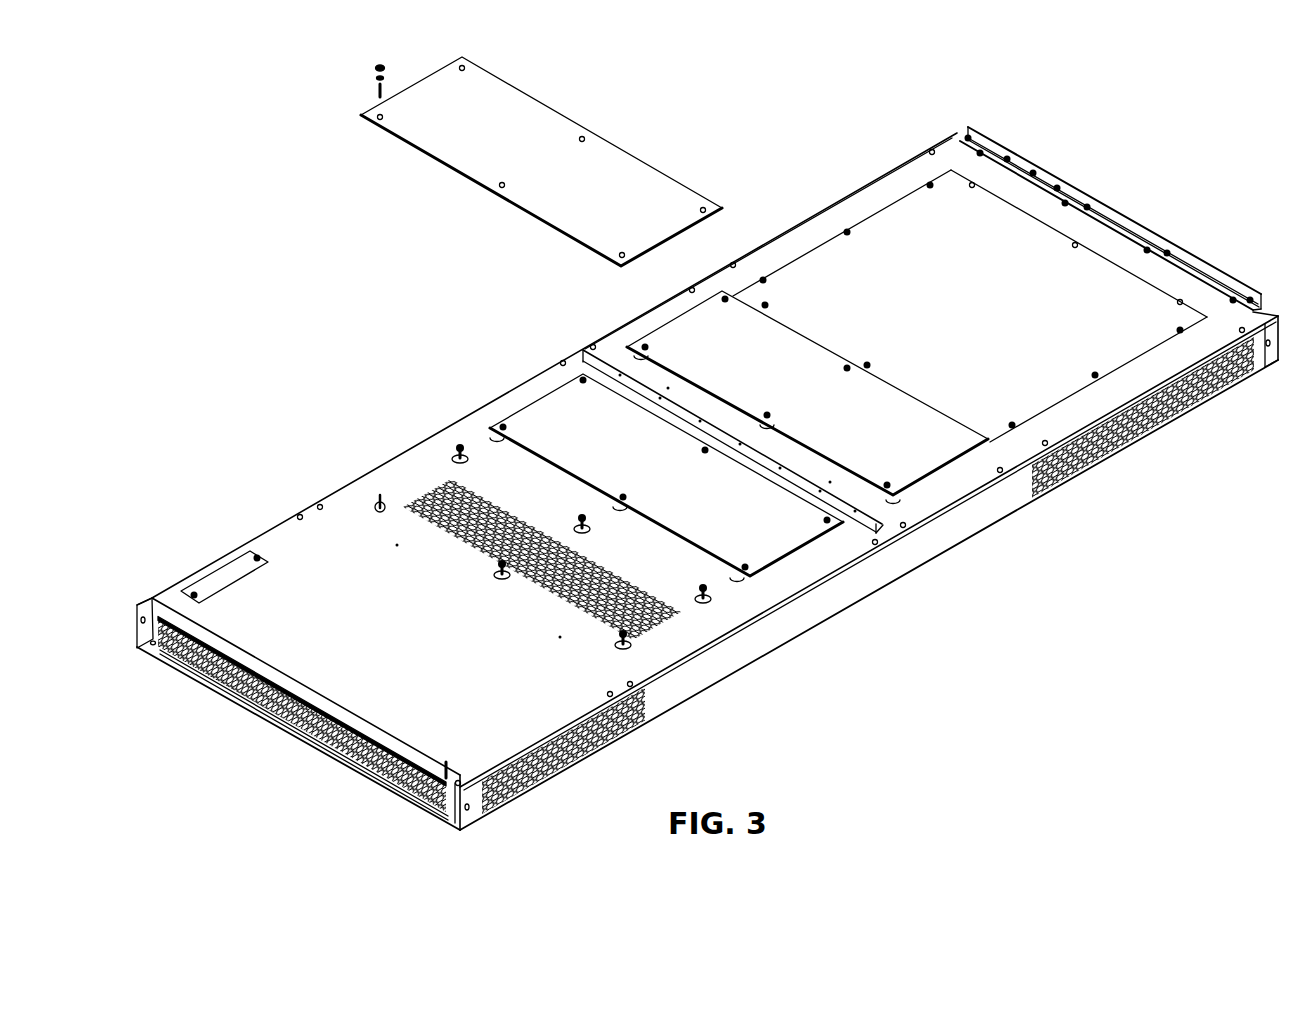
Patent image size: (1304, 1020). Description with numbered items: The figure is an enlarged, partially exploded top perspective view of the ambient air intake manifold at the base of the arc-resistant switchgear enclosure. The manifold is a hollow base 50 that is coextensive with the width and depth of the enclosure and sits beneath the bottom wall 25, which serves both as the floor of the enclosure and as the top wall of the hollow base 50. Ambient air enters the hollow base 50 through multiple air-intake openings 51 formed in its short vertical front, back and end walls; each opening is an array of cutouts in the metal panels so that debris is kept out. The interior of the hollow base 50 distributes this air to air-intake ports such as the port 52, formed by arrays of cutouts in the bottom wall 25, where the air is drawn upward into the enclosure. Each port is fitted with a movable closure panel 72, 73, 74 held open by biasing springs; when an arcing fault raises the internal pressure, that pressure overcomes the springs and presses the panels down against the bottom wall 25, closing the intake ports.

The bottom wall 25 is at (394, 648).
The hollow base 50 is at (707, 478).
The air-intake openings 51 is at (267, 698).
The air-intake port 52 is at (433, 487).
The closure panel 72 is at (503, 97).
The closure panel 73 is at (665, 476).
The closure panel 74 is at (784, 387).